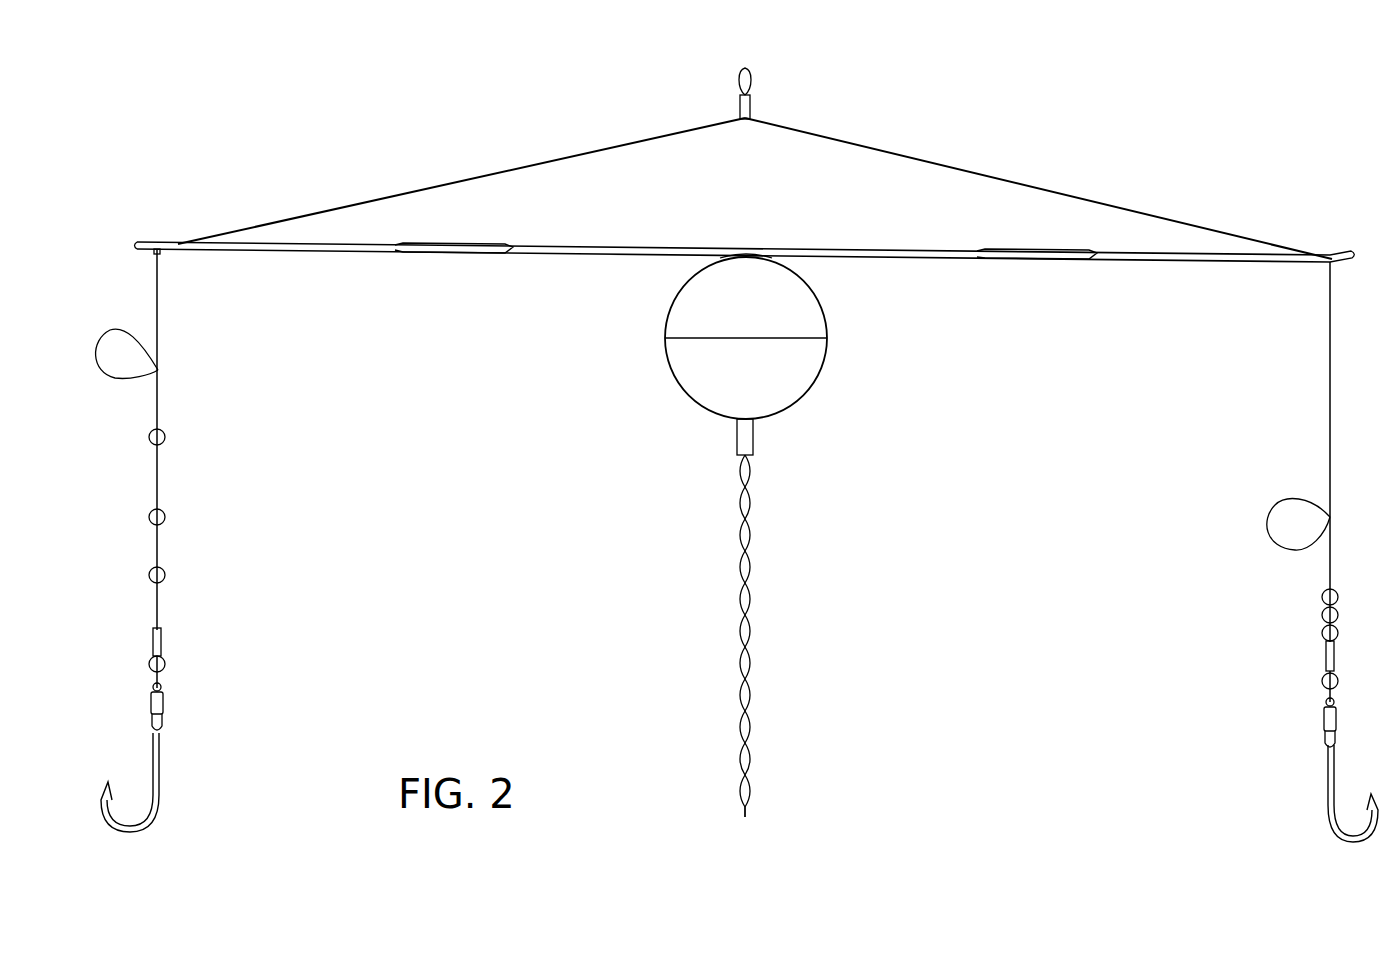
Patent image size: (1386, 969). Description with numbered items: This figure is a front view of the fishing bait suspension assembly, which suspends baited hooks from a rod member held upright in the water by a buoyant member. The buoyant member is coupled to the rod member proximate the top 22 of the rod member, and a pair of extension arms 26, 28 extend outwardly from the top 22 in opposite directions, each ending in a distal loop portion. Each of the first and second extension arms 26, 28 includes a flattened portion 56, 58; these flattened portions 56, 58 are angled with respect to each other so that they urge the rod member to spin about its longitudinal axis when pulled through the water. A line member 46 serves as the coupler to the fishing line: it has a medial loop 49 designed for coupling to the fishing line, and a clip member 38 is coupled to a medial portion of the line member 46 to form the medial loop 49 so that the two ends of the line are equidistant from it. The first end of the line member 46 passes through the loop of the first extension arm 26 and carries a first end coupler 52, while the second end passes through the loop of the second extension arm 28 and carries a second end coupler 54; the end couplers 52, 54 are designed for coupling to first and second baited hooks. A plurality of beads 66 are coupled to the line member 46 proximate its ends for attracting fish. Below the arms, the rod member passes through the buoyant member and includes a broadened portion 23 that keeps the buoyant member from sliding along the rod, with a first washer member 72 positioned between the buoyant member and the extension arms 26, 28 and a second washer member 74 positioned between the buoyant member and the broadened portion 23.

The top of the rod member 22 is at (721, 240).
The broadened portion 23 is at (743, 480).
The first extension arm 26 is at (933, 255).
The second extension arm 28 is at (578, 252).
The clip member 38 is at (760, 105).
The line member 46 is at (934, 160).
The medial loop 49 is at (752, 75).
The first end coupler 52 is at (1322, 712).
The second end coupler 54 is at (162, 702).
The flattened portion of the first extension arm 56 is at (1040, 252).
The flattened portion of the second extension arm 58 is at (480, 205).
The beads 66 is at (164, 432).
The first washer member 72 is at (748, 250).
The second washer member 74 is at (756, 428).